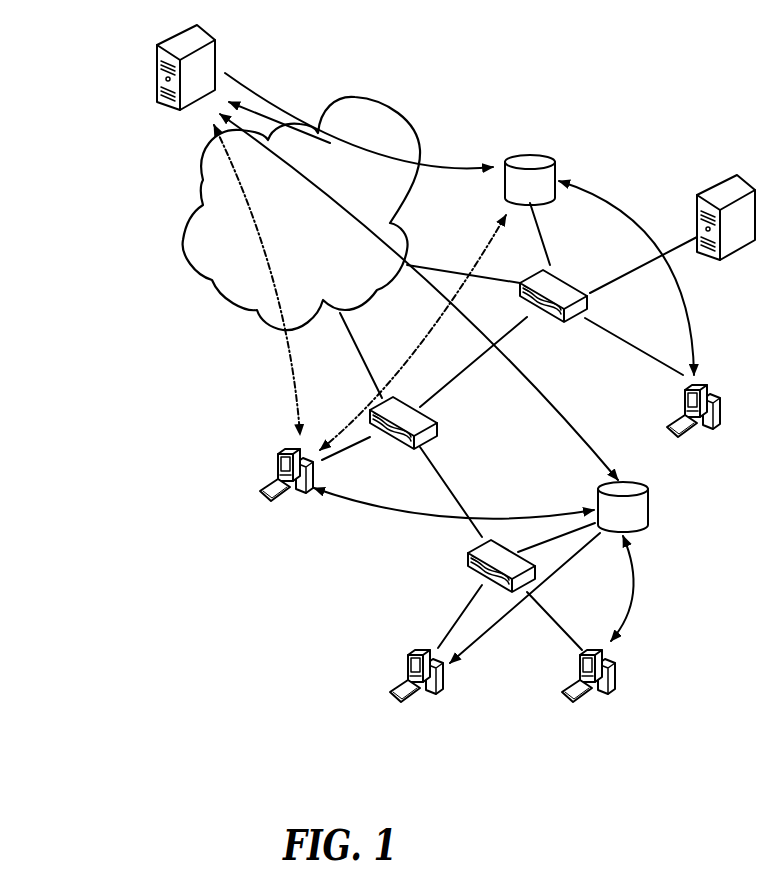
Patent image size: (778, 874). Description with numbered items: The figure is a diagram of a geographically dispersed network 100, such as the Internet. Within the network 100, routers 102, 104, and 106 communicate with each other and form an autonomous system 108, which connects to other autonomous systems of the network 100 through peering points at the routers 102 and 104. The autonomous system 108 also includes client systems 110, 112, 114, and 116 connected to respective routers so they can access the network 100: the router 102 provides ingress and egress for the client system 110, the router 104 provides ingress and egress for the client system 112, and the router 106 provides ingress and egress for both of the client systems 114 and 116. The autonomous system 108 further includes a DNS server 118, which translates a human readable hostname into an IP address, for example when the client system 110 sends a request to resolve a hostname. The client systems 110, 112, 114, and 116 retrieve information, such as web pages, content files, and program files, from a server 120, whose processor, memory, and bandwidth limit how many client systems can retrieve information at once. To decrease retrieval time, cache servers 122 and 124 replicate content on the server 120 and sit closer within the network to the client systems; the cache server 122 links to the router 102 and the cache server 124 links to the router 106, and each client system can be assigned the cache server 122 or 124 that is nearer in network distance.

The network 100 is at (160, 255).
The router 102 is at (563, 282).
The router 104 is at (418, 448).
The router 106 is at (472, 560).
The autonomous system 108 is at (600, 120).
The client system 110 is at (681, 389).
The client system 112 is at (282, 455).
The client system 114 is at (406, 652).
The client system 116 is at (576, 652).
The DNS server 118 is at (712, 200).
The server 120 is at (173, 50).
The cache server 122 is at (510, 198).
The cache server 124 is at (651, 502).